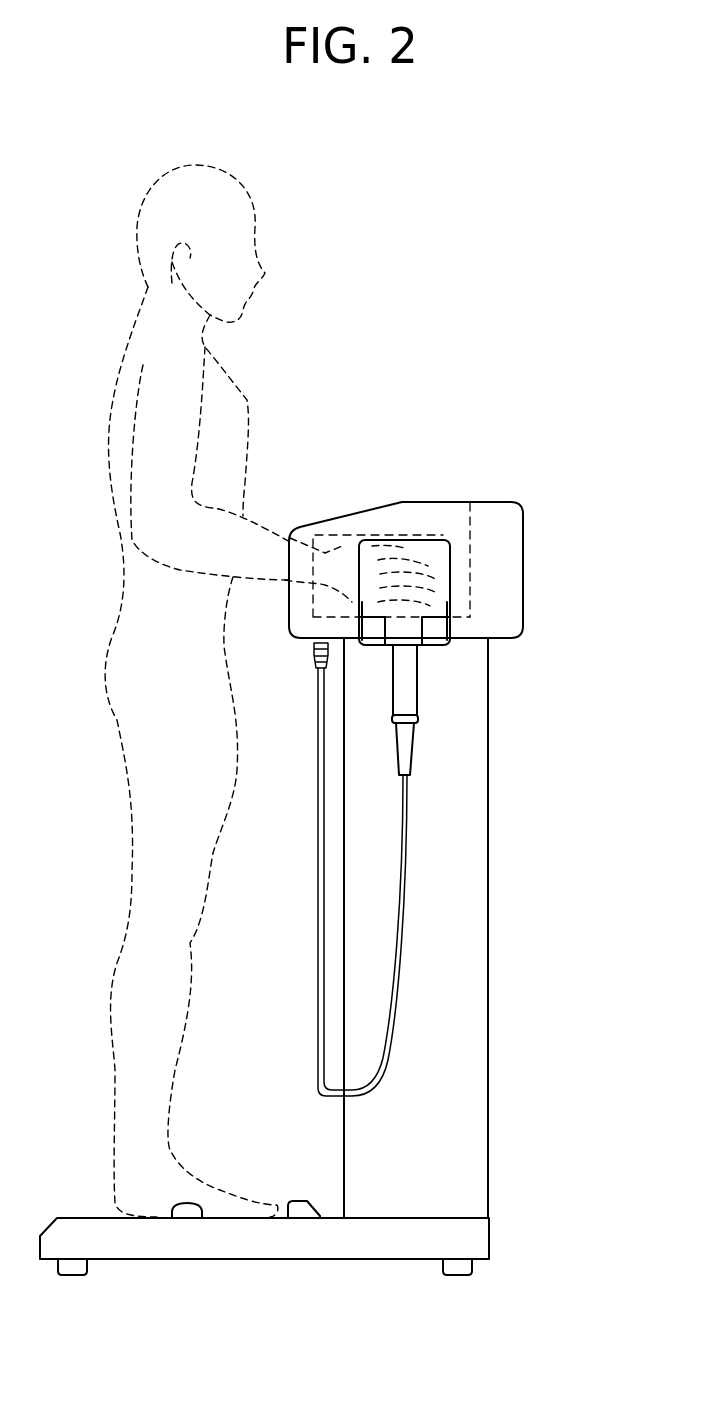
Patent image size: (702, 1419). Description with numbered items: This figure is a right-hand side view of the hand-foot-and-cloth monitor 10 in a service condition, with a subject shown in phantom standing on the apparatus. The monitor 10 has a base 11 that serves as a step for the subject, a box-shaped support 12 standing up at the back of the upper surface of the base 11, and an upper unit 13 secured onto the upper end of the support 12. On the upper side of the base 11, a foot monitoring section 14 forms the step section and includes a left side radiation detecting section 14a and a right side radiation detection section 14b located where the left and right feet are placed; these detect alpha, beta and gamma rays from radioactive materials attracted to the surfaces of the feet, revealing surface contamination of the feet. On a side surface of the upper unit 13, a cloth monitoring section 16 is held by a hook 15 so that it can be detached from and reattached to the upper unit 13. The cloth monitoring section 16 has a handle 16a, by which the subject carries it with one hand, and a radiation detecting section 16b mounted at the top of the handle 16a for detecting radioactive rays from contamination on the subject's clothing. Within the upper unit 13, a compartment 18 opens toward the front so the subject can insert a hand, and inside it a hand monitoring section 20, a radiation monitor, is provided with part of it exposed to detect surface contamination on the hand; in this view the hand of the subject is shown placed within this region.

The hand-foot-and-cloth monitor 10 is at (528, 469).
The base 11 is at (489, 1239).
The support 12 is at (475, 852).
The upper unit 13 is at (528, 597).
The foot monitoring section 14 is at (198, 1197).
The left side radiation detecting section 14a is at (180, 1218).
The right side radiation detection section 14b is at (304, 1209).
The hook 15 is at (437, 637).
The cloth monitoring section 16 is at (405, 540).
The handle 16a is at (409, 702).
The radiation detecting section 16b is at (451, 565).
The compartment 18 is at (470, 536).
The hand monitoring section 20 is at (360, 536).